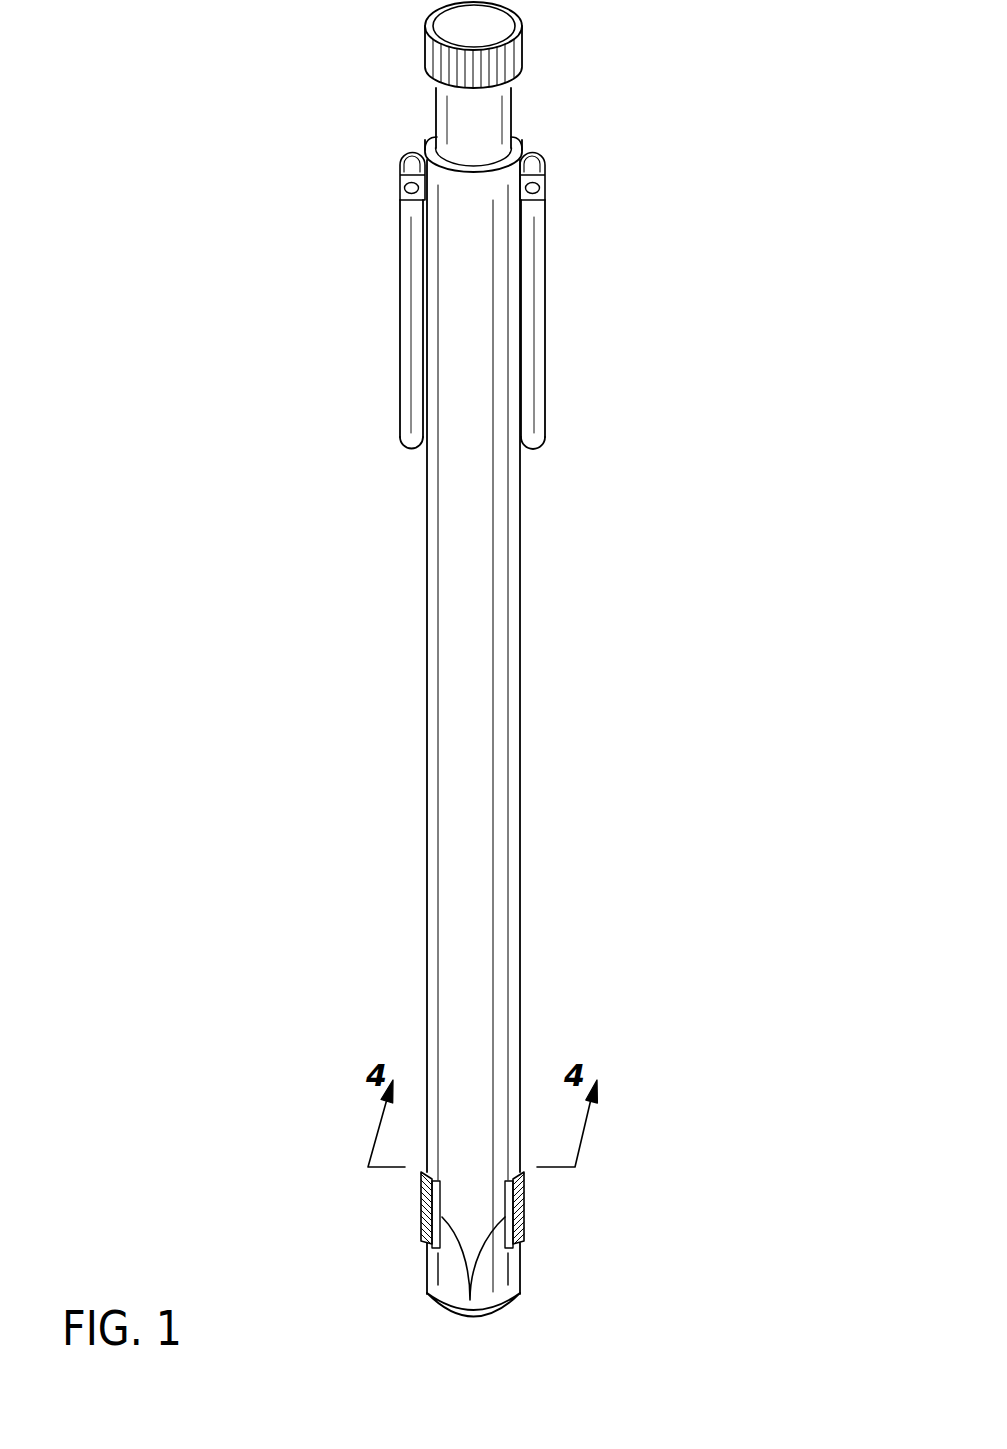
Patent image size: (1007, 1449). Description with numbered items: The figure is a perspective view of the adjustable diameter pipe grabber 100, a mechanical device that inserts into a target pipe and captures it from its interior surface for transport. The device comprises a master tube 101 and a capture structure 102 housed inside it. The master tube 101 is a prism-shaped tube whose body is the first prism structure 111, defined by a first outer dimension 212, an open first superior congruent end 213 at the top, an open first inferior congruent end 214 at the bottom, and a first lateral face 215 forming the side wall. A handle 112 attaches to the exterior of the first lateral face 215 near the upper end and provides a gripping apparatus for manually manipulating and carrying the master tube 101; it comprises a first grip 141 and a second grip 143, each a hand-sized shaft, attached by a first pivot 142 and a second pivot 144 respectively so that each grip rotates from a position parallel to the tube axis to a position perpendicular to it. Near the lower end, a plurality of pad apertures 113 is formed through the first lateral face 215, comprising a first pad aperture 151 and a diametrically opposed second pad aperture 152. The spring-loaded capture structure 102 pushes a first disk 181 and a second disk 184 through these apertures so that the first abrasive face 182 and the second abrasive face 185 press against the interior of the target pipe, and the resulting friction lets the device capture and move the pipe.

The adjustable diameter pipe grabber 100 is at (148, 188).
The master tube 101 is at (493, 157).
The first superior congruent end 213 is at (490, 107).
The first pivot 142 is at (408, 152).
The second pivot 144 is at (543, 190).
The first grip 141 is at (407, 247).
The second grip 143 is at (545, 270).
The handle 112 is at (527, 447).
The first prism structure 111 is at (520, 588).
The first lateral face 215 is at (473, 647).
The first outer dimension 212 is at (373, 785).
The capture structure 102 is at (518, 1172).
The first abrasive face 182 is at (423, 1202).
The second abrasive face 185 is at (524, 1196).
The first disk 181 is at (423, 1225).
The second disk 184 is at (524, 1220).
The first pad aperture 151 is at (440, 1273).
The second pad aperture 152 is at (507, 1275).
The first inferior congruent end 214 is at (444, 1318).
The plurality of pad apertures 113 is at (470, 1300).